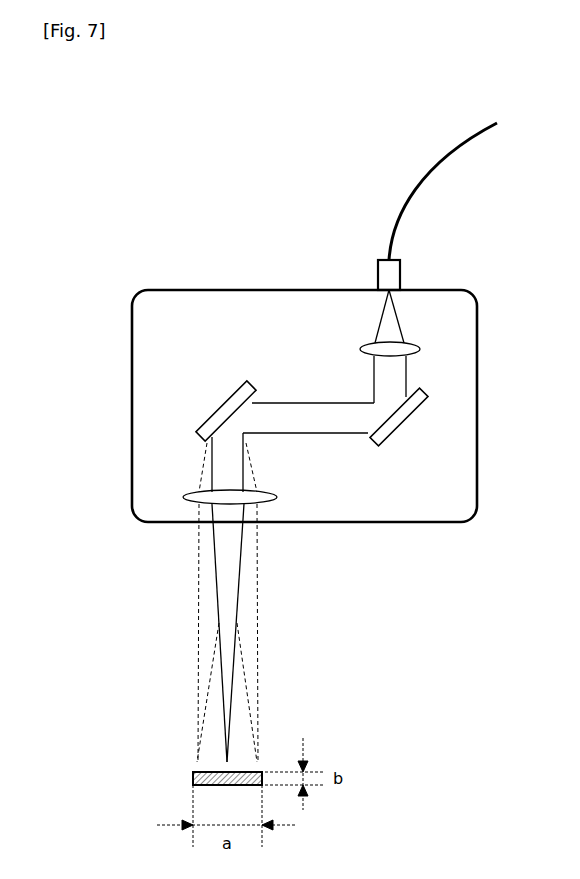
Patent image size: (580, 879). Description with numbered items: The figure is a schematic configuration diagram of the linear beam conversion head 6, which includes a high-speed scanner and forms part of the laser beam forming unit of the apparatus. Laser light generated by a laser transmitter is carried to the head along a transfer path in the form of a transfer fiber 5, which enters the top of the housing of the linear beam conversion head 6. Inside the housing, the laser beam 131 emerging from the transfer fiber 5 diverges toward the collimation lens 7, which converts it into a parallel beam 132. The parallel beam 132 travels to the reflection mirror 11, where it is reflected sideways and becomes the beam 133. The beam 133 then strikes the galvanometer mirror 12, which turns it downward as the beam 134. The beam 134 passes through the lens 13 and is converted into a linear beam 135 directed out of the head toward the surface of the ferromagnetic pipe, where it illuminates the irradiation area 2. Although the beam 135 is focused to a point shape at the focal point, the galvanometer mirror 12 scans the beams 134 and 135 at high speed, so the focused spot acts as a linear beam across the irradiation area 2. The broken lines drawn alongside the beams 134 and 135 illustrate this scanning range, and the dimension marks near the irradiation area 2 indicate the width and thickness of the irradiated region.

The irradiation area 2 is at (193, 778).
The transfer fiber 5 is at (448, 158).
The linear beam conversion head 6 is at (190, 295).
The collimation lens 7 is at (417, 345).
The reflection mirror 11 is at (402, 420).
The galvanometer mirror 12 is at (228, 405).
The lens 13 is at (187, 498).
The laser beam 131 is at (383, 322).
The parallel beam 132 is at (395, 370).
The beam 133 is at (320, 413).
The beam 134 is at (223, 463).
The linear beam 135 is at (225, 568).